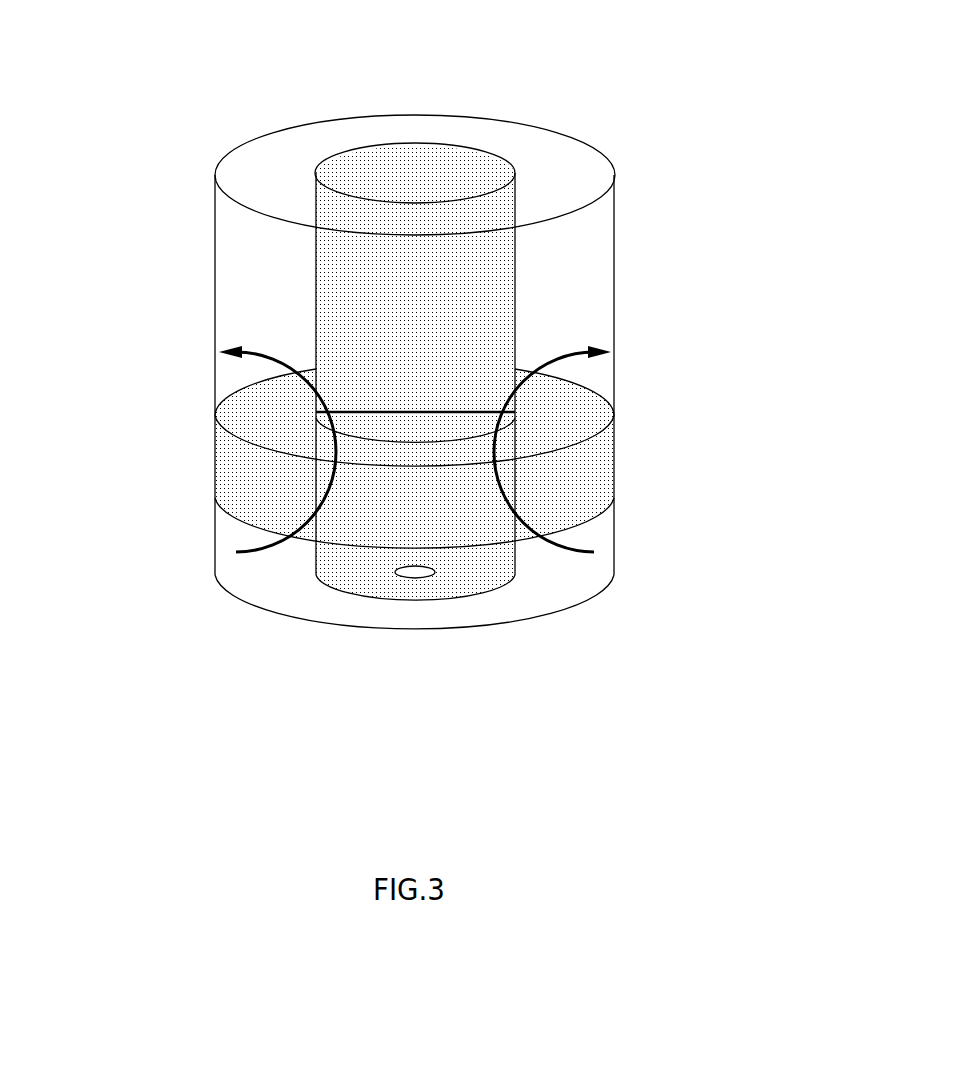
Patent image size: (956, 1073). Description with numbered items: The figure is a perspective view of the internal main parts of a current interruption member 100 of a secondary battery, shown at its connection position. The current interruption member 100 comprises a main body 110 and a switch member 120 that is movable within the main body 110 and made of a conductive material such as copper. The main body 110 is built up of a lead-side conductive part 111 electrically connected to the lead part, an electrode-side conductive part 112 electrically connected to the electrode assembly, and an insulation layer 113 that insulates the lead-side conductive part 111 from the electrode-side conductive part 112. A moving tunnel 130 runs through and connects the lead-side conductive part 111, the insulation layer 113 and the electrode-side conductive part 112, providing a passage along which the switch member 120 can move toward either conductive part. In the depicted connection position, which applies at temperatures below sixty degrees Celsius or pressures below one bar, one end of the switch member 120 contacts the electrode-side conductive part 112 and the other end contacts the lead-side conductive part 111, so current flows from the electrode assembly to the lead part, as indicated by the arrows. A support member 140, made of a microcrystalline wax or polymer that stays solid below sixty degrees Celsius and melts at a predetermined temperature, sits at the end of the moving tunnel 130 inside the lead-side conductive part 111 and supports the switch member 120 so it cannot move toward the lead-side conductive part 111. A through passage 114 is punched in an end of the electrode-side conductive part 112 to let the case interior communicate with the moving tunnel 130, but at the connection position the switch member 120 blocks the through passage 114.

The current interruption member 100 is at (564, 92).
The main body 110 is at (332, 455).
The lead-side conductive part 111 is at (236, 372).
The electrode-side conductive part 112 is at (186, 534).
The insulation layer 113 is at (236, 453).
The through passage 114 is at (413, 578).
The switch member 120 is at (478, 457).
The moving tunnel 130 is at (563, 533).
The support member 140 is at (507, 257).